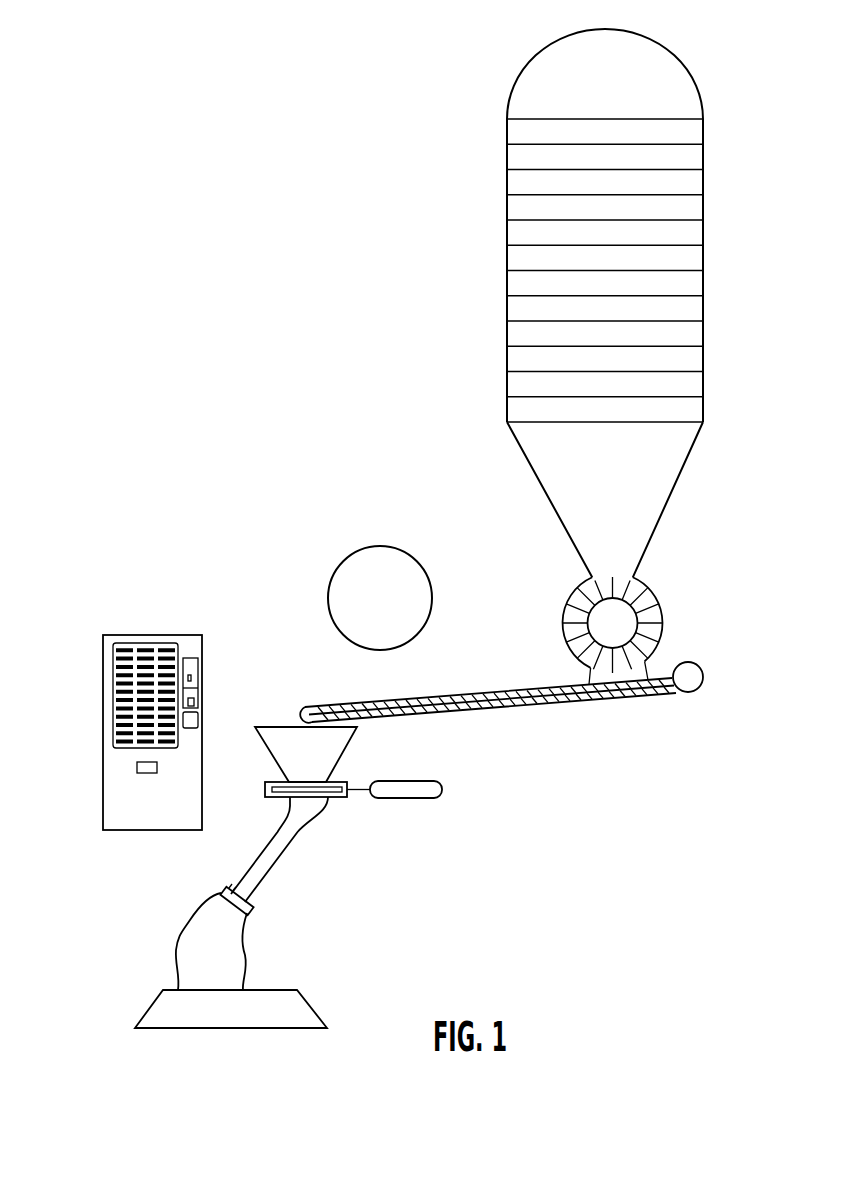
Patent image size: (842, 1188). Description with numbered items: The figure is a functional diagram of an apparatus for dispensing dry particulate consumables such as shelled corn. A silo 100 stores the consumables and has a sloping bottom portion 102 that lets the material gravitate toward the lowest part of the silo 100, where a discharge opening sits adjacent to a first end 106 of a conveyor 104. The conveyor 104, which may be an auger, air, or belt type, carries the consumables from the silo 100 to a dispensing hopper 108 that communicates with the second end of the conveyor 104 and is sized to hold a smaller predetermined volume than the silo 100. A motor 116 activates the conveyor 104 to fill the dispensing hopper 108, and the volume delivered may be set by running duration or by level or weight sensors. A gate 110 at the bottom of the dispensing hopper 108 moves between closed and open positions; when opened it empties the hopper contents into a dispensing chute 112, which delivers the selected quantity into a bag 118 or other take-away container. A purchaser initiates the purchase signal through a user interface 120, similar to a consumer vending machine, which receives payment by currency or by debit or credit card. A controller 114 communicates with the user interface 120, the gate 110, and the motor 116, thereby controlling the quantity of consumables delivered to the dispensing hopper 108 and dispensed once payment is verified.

The silo 100 is at (548, 101).
The sloping bottom portion 102 is at (662, 490).
The conveyor 104 is at (433, 706).
The first end 106 is at (655, 588).
The dispensing hopper 108 is at (323, 769).
The gate 110 is at (337, 798).
The dispensing chute 112 is at (297, 833).
The controller 114 is at (393, 611).
The motor 116 is at (689, 681).
The bag 118 is at (188, 948).
The user interface 120 is at (107, 716).